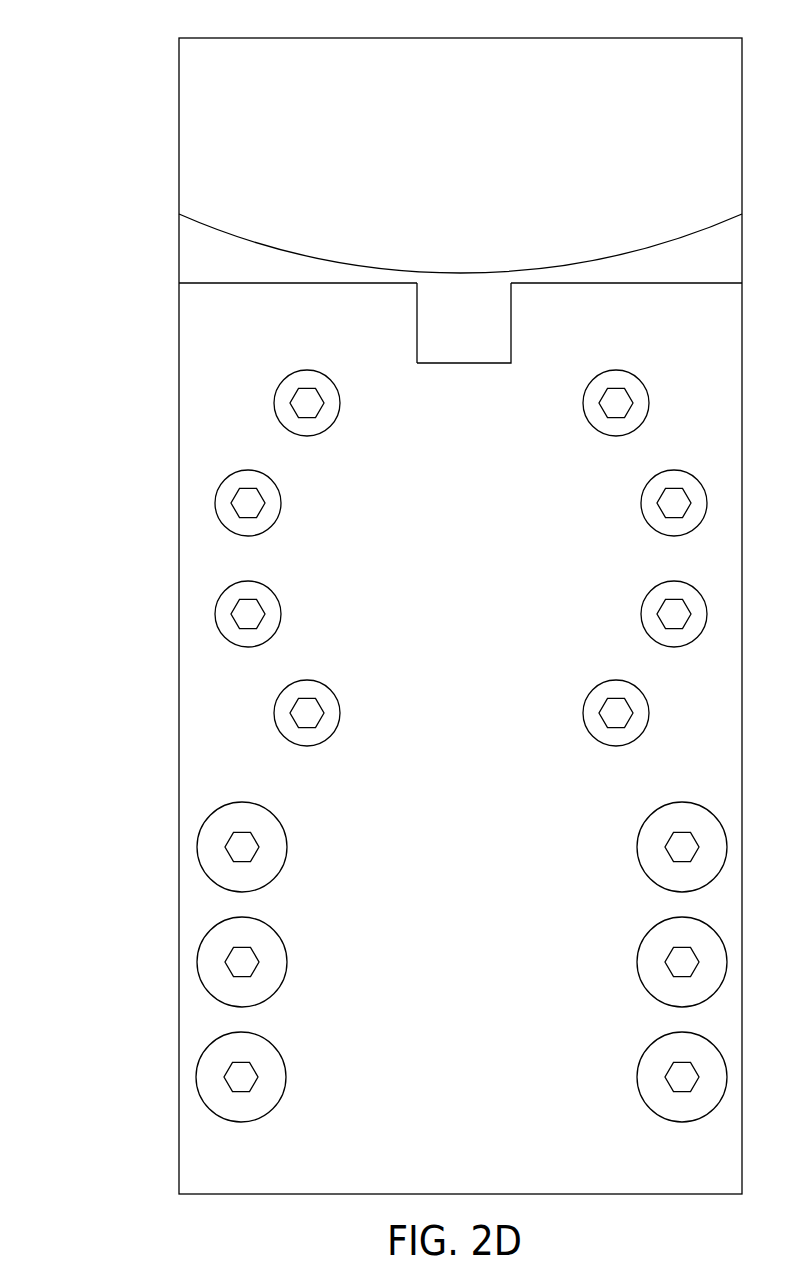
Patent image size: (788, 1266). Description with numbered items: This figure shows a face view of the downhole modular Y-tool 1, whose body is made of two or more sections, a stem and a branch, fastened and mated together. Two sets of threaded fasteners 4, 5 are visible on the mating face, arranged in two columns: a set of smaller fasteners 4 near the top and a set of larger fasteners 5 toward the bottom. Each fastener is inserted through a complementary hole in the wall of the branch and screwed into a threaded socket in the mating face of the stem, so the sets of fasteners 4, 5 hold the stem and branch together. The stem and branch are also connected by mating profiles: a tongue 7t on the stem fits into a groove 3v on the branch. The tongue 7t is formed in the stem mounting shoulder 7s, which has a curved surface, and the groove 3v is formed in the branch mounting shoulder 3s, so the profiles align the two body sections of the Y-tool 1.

The downhole modular Y-tool 1 is at (68, 95).
The mounting shoulder 3s is at (235, 283).
The groove 3v is at (417, 322).
The tongue 7t is at (468, 331).
The mounting shoulder 7s is at (657, 281).
The threaded fastener 4 is at (336, 418).
The threaded fastener 5 is at (287, 963).